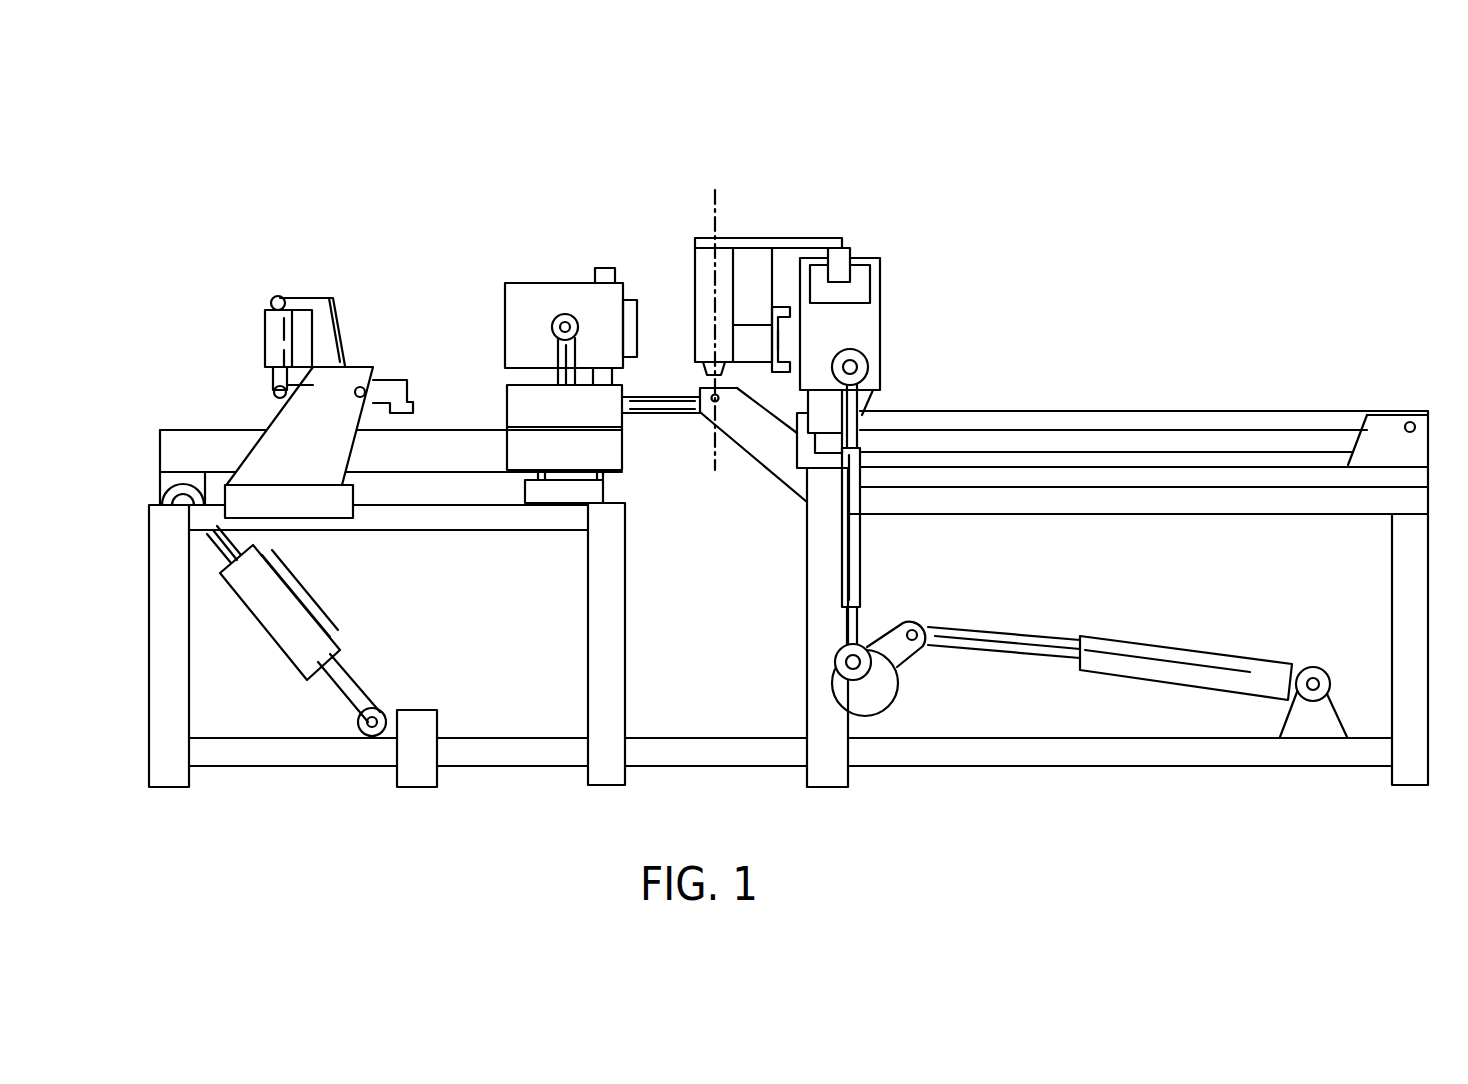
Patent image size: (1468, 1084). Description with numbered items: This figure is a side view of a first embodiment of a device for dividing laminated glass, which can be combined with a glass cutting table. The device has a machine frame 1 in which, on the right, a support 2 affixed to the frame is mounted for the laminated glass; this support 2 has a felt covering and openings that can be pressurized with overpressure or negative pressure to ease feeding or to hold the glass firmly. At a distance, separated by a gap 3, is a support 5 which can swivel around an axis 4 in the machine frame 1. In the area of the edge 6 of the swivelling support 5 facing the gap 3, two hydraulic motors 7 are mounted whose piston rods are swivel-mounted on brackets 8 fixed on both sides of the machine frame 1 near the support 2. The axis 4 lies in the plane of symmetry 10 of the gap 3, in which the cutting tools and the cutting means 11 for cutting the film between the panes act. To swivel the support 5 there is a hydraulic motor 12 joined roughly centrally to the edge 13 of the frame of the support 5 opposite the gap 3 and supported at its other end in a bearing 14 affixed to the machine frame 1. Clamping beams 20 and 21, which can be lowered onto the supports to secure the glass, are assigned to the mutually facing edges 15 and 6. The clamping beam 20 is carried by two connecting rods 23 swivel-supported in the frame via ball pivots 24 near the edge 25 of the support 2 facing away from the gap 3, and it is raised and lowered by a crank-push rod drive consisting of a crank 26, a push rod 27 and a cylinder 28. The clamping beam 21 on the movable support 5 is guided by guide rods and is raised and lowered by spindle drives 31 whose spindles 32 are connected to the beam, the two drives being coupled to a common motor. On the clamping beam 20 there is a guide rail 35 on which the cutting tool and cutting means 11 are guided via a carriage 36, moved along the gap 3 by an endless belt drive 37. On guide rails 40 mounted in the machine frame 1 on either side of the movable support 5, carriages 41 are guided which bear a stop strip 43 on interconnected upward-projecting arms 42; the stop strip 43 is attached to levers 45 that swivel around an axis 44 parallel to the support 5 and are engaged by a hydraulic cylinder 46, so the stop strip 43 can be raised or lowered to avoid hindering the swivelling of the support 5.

The machine frame 1 is at (600, 626).
The support affixed to the frame 2 is at (1018, 410).
The gap 3 is at (702, 580).
The axis 4 is at (715, 412).
The swivelling support 5 is at (447, 438).
The edge 6 is at (600, 456).
The hydraulic motors 7 is at (540, 410).
The brackets 8 is at (792, 482).
The plane of symmetry 10 is at (717, 272).
The cutting means 11 is at (707, 305).
The hydraulic motor 12 is at (262, 605).
The edge 13 is at (172, 456).
The bearing 14 is at (378, 710).
The edge 15 is at (805, 448).
The clamping beam 20 is at (851, 317).
The clamping beam 21 is at (531, 300).
The conveyor table 23 is at (1255, 440).
The ball pivots 24 is at (1405, 425).
The edge 25 is at (1426, 378).
The crank 26 is at (873, 700).
The push rod 27 is at (852, 566).
The cylinder 28 is at (1222, 680).
The spindle drives 31 is at (556, 483).
The spindles 32 is at (556, 354).
The guide rail 35 is at (790, 340).
The carriage 36 is at (768, 310).
The endless belt drive 37 is at (843, 246).
The guide rails 40 is at (450, 530).
The carriages 41 is at (240, 502).
The arms 42 is at (318, 447).
The stop strip 43 is at (403, 345).
The axis 44 is at (357, 385).
The levers 45 is at (387, 393).
The hydraulic cylinder 46 is at (270, 335).